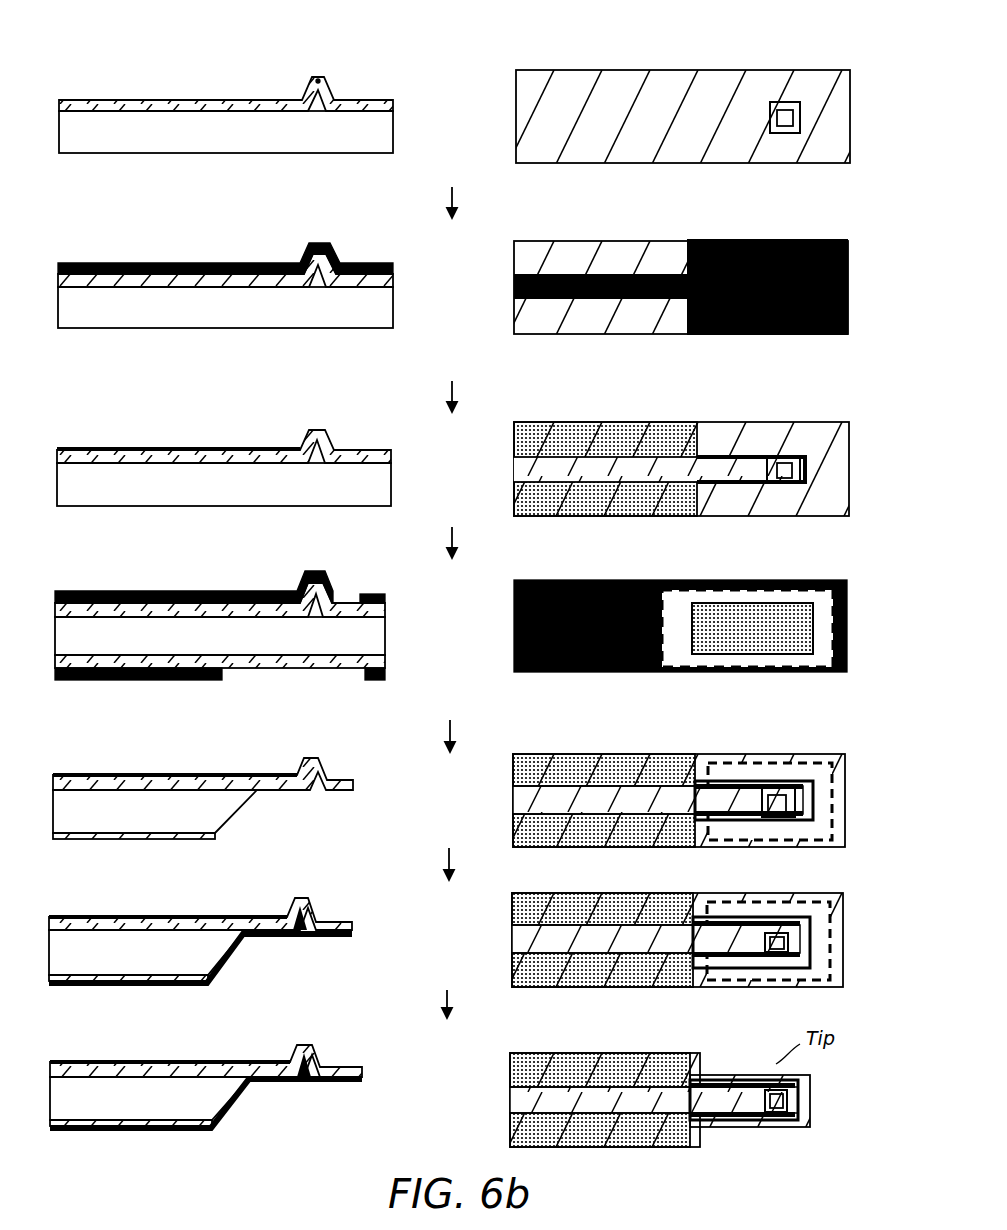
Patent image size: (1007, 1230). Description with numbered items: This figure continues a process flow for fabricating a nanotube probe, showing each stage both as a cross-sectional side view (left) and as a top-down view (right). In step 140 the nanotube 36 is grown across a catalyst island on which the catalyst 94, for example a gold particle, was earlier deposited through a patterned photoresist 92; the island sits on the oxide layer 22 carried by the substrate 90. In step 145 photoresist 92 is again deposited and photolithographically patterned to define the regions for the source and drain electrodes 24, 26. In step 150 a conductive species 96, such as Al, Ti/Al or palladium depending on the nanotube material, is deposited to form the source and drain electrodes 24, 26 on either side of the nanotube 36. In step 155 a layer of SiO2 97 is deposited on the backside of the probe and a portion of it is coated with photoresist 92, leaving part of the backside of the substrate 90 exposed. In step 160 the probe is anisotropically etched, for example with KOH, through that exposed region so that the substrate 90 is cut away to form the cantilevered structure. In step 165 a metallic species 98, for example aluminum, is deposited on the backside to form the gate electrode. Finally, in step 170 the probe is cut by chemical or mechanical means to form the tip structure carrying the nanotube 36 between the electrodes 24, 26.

The silicon dioxide layer 22 is at (233, 100).
The source electrode 24 is at (580, 426).
The drain electrode 26 is at (570, 508).
The nanotube 36 is at (317, 79).
The substrate 90 is at (318, 143).
The photoresist 92 is at (222, 262).
The catalyst 94 is at (792, 135).
The conductive species 96 is at (214, 448).
The SiO2 layer 97 is at (258, 670).
The metallic species 98 is at (224, 962).
The step 140 is at (496, 130).
The step 145 is at (496, 303).
The step 150 is at (496, 477).
The step 155 is at (496, 637).
The step 160 is at (485, 803).
The step 165 is at (485, 949).
The step 170 is at (485, 1105).